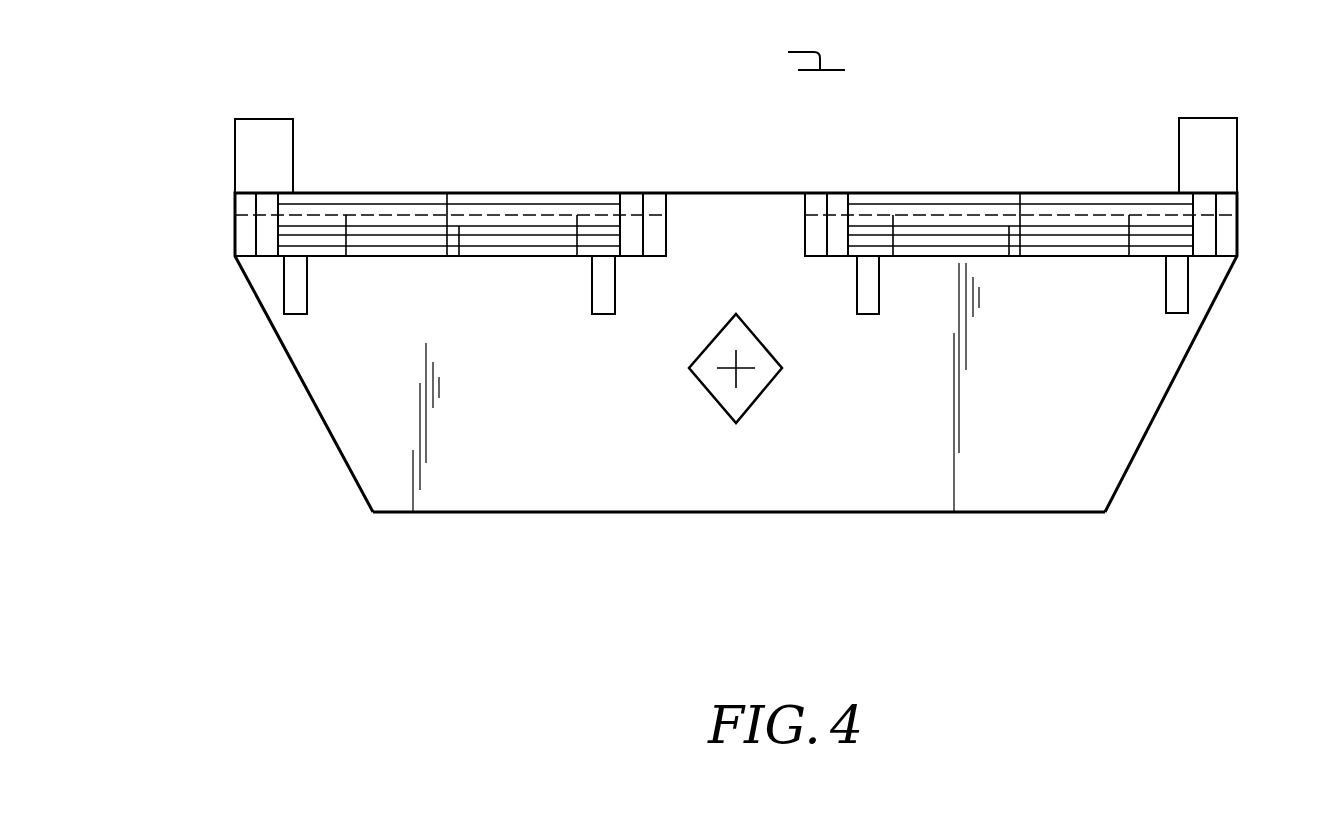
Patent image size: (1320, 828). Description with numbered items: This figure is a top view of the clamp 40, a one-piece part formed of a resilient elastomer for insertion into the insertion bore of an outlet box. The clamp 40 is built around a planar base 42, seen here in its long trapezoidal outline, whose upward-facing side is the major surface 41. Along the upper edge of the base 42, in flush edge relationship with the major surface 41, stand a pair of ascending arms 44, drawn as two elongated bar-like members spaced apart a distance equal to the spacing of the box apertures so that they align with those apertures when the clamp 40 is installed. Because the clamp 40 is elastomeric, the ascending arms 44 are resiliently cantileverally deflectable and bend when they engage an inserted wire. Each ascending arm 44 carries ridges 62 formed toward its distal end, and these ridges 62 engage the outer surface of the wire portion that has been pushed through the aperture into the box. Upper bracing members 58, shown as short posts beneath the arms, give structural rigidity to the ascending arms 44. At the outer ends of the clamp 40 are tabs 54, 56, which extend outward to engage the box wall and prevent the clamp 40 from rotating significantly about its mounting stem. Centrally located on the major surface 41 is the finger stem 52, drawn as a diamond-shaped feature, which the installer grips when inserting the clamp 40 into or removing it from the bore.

The clamp 40 is at (795, 58).
The major surface 41 is at (1090, 475).
The planar base 42 is at (983, 512).
The ascending arms 44 is at (245, 230).
The finger stem 52 is at (755, 400).
The tab 54 is at (293, 142).
The tab 56 is at (1237, 139).
The upper bracing members 58 is at (615, 295).
The ridges 62 is at (949, 238).